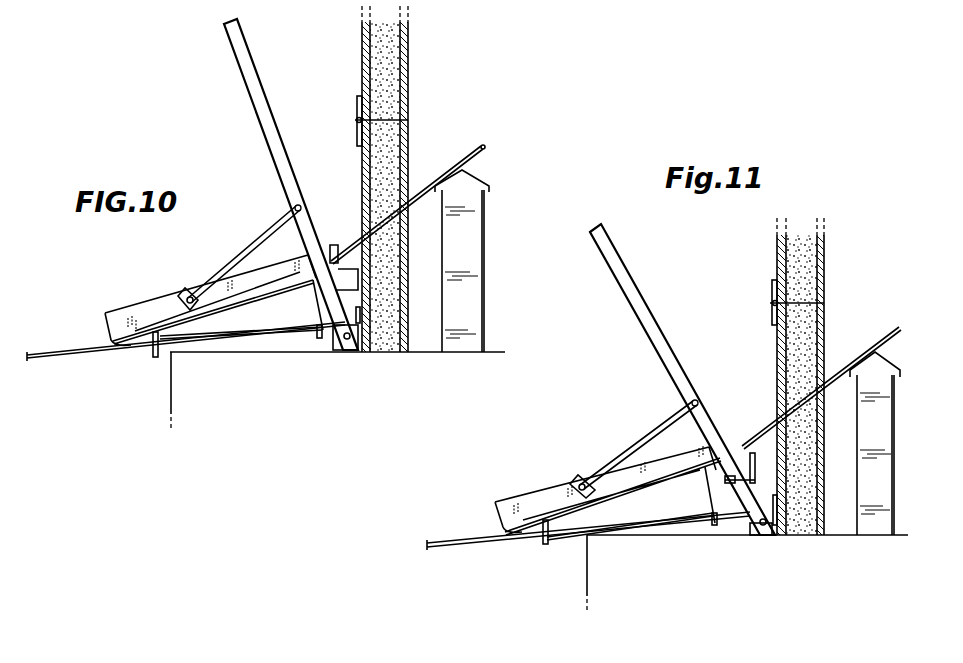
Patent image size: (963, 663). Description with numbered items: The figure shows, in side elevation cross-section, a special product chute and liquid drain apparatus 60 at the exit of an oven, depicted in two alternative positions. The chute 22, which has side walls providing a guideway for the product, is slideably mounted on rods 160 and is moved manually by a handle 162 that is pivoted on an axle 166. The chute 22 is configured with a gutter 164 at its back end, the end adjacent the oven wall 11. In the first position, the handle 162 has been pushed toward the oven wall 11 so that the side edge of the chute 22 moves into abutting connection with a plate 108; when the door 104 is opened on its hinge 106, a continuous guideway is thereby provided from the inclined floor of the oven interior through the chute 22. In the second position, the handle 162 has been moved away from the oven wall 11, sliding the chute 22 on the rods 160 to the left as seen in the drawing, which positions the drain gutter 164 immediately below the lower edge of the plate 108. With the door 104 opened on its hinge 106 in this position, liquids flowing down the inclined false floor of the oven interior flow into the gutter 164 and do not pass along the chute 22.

In FIG. 10, the oven wall 11 is at (362, 82).
In FIG. 11, the oven wall 11 is at (827, 238).
In FIG. 10, the chute 22 is at (153, 312).
In FIG. 11, the chute 22 is at (520, 506).
In FIG. 10, the panel support assembly 60 is at (263, 193).
In FIG. 11, the panel support assembly 60 is at (856, 290).
In FIG. 10, the door 104 is at (408, 148).
In FIG. 11, the door 104 is at (824, 325).
In FIG. 10, the hinge 106 is at (358, 137).
In FIG. 11, the hinge 106 is at (772, 301).
In FIG. 10, the plate 108 is at (484, 147).
In FIG. 11, the plate 108 is at (892, 328).
In FIG. 10, the rods 160 is at (88, 362).
In FIG. 11, the rods 160 is at (487, 547).
In FIG. 10, the handle 162 is at (247, 64).
In FIG. 11, the handle 162 is at (630, 283).
In FIG. 10, the gutter 164 is at (350, 262).
In FIG. 11, the gutter 164 is at (741, 447).
In FIG. 10, the axle 166 is at (347, 352).
In FIG. 11, the axle 166 is at (757, 537).